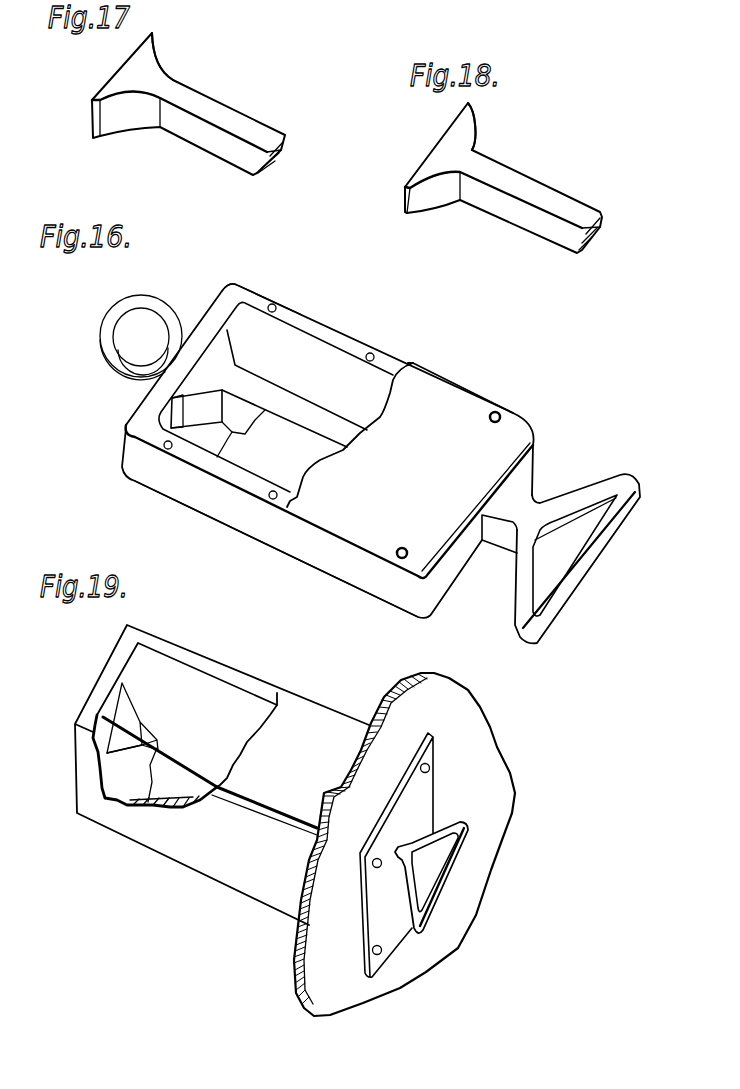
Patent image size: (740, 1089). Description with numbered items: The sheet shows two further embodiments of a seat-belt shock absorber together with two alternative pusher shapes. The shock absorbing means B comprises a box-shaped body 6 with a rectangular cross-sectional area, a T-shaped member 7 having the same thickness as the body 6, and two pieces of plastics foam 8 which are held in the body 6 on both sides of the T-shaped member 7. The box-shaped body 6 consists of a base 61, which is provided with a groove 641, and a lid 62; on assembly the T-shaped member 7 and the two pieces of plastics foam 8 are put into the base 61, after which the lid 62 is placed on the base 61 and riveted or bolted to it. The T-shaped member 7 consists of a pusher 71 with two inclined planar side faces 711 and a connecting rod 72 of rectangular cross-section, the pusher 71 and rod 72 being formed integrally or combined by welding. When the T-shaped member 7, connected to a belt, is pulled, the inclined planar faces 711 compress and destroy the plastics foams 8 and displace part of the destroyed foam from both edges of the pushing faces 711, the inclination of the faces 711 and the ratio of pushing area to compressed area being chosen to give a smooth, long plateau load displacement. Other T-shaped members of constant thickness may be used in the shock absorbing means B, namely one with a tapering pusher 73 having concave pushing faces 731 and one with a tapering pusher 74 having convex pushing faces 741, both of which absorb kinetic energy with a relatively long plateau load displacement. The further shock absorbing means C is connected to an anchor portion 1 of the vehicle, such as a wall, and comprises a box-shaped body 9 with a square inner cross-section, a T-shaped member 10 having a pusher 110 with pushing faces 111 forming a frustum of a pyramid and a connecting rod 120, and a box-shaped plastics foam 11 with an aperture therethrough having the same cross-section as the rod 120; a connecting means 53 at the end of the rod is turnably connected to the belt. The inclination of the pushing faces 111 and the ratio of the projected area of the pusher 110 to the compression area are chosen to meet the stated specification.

In FIG. 19, the anchor portion 1 is at (465, 743).
In FIG. 16, the box-shaped body 6 is at (423, 380).
In FIG. 17, the T-shaped member 7 is at (250, 121).
In FIG. 18, the T-shaped member 7 is at (590, 182).
In FIG. 16, the T-shaped member 7 is at (288, 314).
In FIG. 16, the plastics foam 8 is at (380, 377).
In FIG. 19, the box-shaped body 9 is at (222, 793).
In FIG. 19, the T-shaped member 10 is at (110, 700).
In FIG. 19, the box-shaped plastics foam 11 is at (202, 698).
In FIG. 19, the connecting means 53 is at (460, 833).
In FIG. 16, the base 61 is at (224, 284).
In FIG. 16, the lid 62 is at (577, 502).
In FIG. 16, the pusher 71 is at (124, 397).
In FIG. 16, the connecting rod 72 is at (210, 528).
In FIG. 17, the tapering pusher 73 is at (145, 67).
In FIG. 18, the tapering pusher 74 is at (491, 125).
In FIG. 19, the pusher 110 is at (117, 725).
In FIG. 19, the pushing faces 111 is at (115, 735).
In FIG. 19, the connecting rod 120 is at (140, 755).
In FIG. 16, the groove 641 is at (482, 540).
In FIG. 16, the inclined planar side faces 711 is at (203, 413).
In FIG. 17, the concave pushing faces 731 is at (123, 117).
In FIG. 18, the convex pushing faces 741 is at (437, 202).
In FIG. 16, the shock absorbing means B is at (392, 355).
In FIG. 19, the shock absorbing means C is at (146, 921).